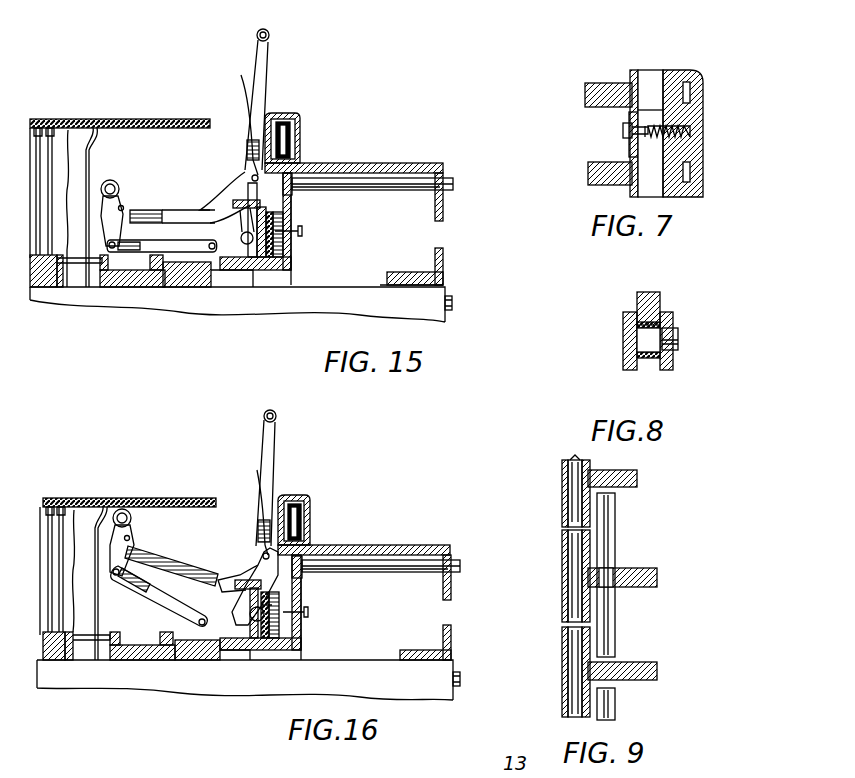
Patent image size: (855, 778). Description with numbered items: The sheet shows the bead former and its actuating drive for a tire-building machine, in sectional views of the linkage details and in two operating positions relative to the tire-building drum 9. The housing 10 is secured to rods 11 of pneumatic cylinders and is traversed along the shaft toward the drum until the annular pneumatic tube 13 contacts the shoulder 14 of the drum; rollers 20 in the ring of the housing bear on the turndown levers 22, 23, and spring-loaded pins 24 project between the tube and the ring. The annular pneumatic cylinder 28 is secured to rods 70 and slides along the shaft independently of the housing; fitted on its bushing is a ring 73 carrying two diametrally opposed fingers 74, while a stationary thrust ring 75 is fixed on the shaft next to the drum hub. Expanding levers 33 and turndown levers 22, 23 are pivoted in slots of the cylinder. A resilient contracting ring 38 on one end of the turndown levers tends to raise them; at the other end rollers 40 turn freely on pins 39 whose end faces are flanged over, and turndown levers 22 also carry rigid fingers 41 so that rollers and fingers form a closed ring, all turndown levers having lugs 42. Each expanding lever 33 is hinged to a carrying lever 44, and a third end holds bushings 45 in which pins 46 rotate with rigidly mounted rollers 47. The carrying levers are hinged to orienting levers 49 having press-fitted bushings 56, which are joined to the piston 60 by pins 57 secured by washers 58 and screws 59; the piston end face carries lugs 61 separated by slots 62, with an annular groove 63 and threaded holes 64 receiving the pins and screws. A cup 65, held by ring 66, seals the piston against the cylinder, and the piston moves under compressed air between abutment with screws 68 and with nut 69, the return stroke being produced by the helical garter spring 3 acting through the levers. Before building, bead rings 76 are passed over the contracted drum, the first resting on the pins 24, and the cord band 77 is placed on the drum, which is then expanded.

In FIG. 15, the helical garter spring 3 is at (115, 182).
In FIG. 16, the helical garter spring 3 is at (116, 510).
In FIG. 15, the tire-building drum 9 is at (50, 193).
In FIG. 16, the tire-building drum 9 is at (57, 571).
In FIG. 15, the housing 10 is at (288, 118).
In FIG. 16, the housing 10 is at (293, 500).
In FIG. 15, the rods 11 is at (450, 295).
In FIG. 16, the rods 11 is at (458, 672).
In FIG. 15, the annular pneumatic tube 13 is at (292, 133).
In FIG. 16, the annular pneumatic tube 13 is at (305, 512).
In FIG. 15, the shoulder 14 is at (103, 128).
In FIG. 16, the shoulder 14 is at (98, 505).
In FIG. 15, the rollers 20 is at (312, 165).
In FIG. 16, the rollers 20 is at (316, 545).
In FIG. 15, the turndown levers 22 is at (258, 43).
In FIG. 16, the turndown levers 22 is at (265, 430).
In FIG. 9, the turndown levers 22 is at (655, 568).
In FIG. 15, the turndown levers 23 is at (258, 54).
In FIG. 16, the turndown levers 23 is at (264, 436).
In FIG. 9, the turndown levers 23 is at (636, 485).
In FIG. 15, the pins 24 is at (262, 175).
In FIG. 16, the pins 24 is at (275, 553).
In FIG. 15, the annular pneumatic cylinder 28 is at (194, 287).
In FIG. 16, the annular pneumatic cylinder 28 is at (210, 660).
In FIG. 15, the expanding levers 33 is at (155, 210).
In FIG. 16, the expanding levers 33 is at (166, 560).
In FIG. 15, the resilient contracting ring 38 is at (262, 200).
In FIG. 16, the resilient contracting ring 38 is at (268, 580).
In FIG. 9, the pins 39 is at (576, 482).
In FIG. 15, the rollers 40 is at (270, 38).
In FIG. 16, the rollers 40 is at (277, 417).
In FIG. 9, the rollers 40 is at (560, 508).
In FIG. 9, the fingers 41 is at (606, 532).
In FIG. 15, the lugs 42 is at (246, 100).
In FIG. 16, the lugs 42 is at (252, 475).
In FIG. 15, the carrying levers 44 is at (119, 188).
In FIG. 16, the carrying levers 44 is at (132, 512).
In FIG. 8, the bushings 45 is at (650, 360).
In FIG. 8, the pins 46 is at (623, 314).
In FIG. 8, the rollers 47 is at (673, 312).
In FIG. 15, the orienting levers 49 is at (130, 290).
In FIG. 16, the orienting levers 49 is at (110, 582).
In FIG. 7, the orienting levers 49 is at (594, 83).
In FIG. 7, the bushings 56 is at (634, 80).
In FIG. 7, the pins 57 is at (650, 70).
In FIG. 7, the washers 58 is at (630, 118).
In FIG. 7, the screws 59 is at (624, 132).
In FIG. 15, the piston 60 is at (246, 275).
In FIG. 16, the piston 60 is at (253, 650).
In FIG. 7, the piston 60 is at (690, 120).
In FIG. 7, the lugs 61 is at (684, 70).
In FIG. 7, the slots 62 is at (690, 87).
In FIG. 7, the annular groove 63 is at (654, 140).
In FIG. 7, the threaded holes 64 is at (690, 133).
In FIG. 15, the cup 65 is at (268, 270).
In FIG. 16, the cup 65 is at (265, 640).
In FIG. 15, the ring 66 is at (283, 246).
In FIG. 16, the ring 66 is at (278, 620).
In FIG. 15, the screws 68 is at (303, 233).
In FIG. 16, the screws 68 is at (309, 612).
In FIG. 15, the nut 69 is at (157, 287).
In FIG. 16, the nut 69 is at (170, 660).
In FIG. 15, the rods 70 is at (410, 182).
In FIG. 16, the rods 70 is at (410, 564).
In FIG. 15, the ring 73 is at (101, 287).
In FIG. 16, the ring 73 is at (129, 660).
In FIG. 15, the fingers 74 is at (68, 255).
In FIG. 16, the fingers 74 is at (76, 635).
In FIG. 15, the stationary thrust ring 75 is at (56, 287).
In FIG. 16, the stationary thrust ring 75 is at (73, 660).
In FIG. 15, the bead rings 76 is at (268, 162).
In FIG. 16, the bead rings 76 is at (280, 545).
In FIG. 15, the band 77 is at (163, 119).
In FIG. 16, the band 77 is at (179, 498).